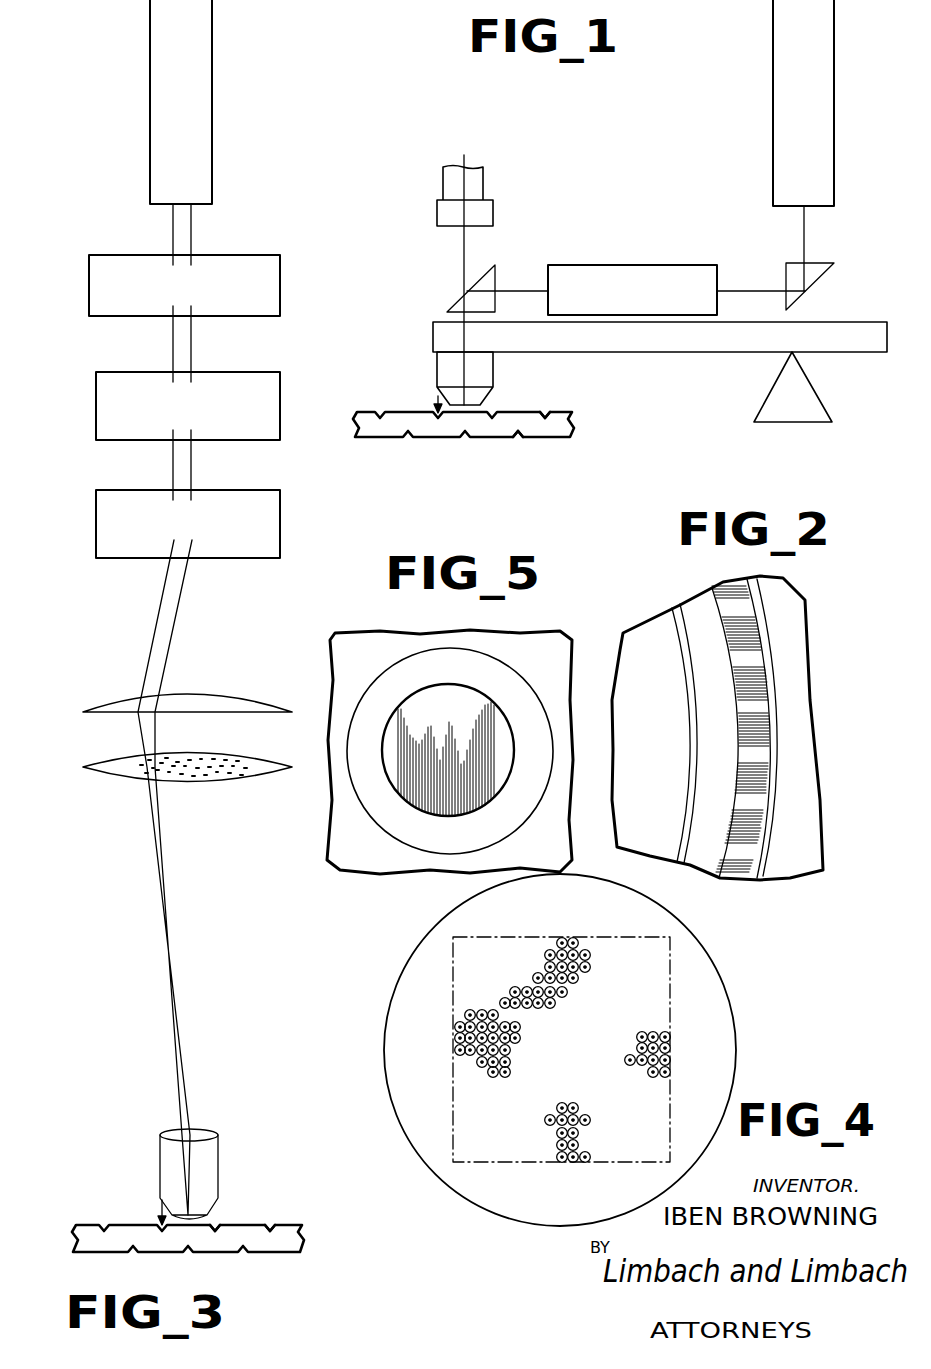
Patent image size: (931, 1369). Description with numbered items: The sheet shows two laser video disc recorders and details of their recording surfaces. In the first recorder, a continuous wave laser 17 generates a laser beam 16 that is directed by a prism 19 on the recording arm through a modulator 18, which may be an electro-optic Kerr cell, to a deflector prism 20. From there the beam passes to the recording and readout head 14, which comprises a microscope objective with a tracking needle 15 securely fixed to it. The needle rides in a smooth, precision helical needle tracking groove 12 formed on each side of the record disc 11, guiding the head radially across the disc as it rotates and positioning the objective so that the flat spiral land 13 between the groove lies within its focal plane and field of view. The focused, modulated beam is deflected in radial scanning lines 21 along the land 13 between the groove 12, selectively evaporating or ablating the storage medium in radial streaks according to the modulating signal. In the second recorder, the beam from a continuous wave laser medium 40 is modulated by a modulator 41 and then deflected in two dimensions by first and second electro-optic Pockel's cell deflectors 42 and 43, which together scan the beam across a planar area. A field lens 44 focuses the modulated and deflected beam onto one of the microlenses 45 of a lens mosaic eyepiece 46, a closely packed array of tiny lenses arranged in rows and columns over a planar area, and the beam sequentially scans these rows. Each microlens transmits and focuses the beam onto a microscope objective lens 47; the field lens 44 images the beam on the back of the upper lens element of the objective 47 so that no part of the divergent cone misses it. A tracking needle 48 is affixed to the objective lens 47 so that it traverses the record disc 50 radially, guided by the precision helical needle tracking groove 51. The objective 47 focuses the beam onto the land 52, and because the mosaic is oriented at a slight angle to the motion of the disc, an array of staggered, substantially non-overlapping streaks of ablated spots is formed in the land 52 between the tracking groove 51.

In FIG. 1, the record disc 11 is at (573, 418).
In FIG. 1, the helical needle tracking groove 12 is at (518, 434).
In FIG. 2, the helical needle tracking groove 12 is at (773, 702).
In FIG. 1, the land 13 is at (527, 408).
In FIG. 2, the land 13 is at (693, 612).
In FIG. 1, the recording and readout head 14 is at (495, 368).
In FIG. 1, the tracking needle 15 is at (434, 401).
In FIG. 1, the laser beam 16 is at (805, 232).
In FIG. 1, the continuous wave laser 17 is at (834, 78).
In FIG. 1, the modulator 18 is at (650, 265).
In FIG. 1, the prism 19 is at (827, 275).
In FIG. 1, the deflector prism 20 is at (497, 275).
In FIG. 2, the radial scanning lines 21 is at (767, 735).
In FIG. 3, the continuous wave laser medium 40 is at (150, 90).
In FIG. 3, the modulator 41 is at (89, 292).
In FIG. 3, the first electro-optic Pockel's cell deflector 42 is at (96, 405).
In FIG. 3, the second electro-optic Pockel's cell deflector 43 is at (96, 523).
In FIG. 3, the field lens 44 is at (90, 711).
In FIG. 4, the microlenses 45 is at (455, 1035).
In FIG. 3, the lens mosaic eyepiece 46 is at (85, 767).
In FIG. 4, the lens mosaic eyepiece 46 is at (722, 1025).
In FIG. 3, the microscope objective lens 47 is at (160, 1165).
In FIG. 5, the microscope objective lens 47 is at (360, 803).
In FIG. 3, the tracking needle 48 is at (158, 1212).
In FIG. 3, the record disc 50 is at (302, 1238).
In FIG. 5, the record disc 50 is at (545, 638).
In FIG. 3, the helical needle tracking groove 51 is at (272, 1225).
In FIG. 5, the helical needle tracking groove 51 is at (495, 730).
In FIG. 3, the land 52 is at (248, 1225).
In FIG. 5, the land 52 is at (442, 690).